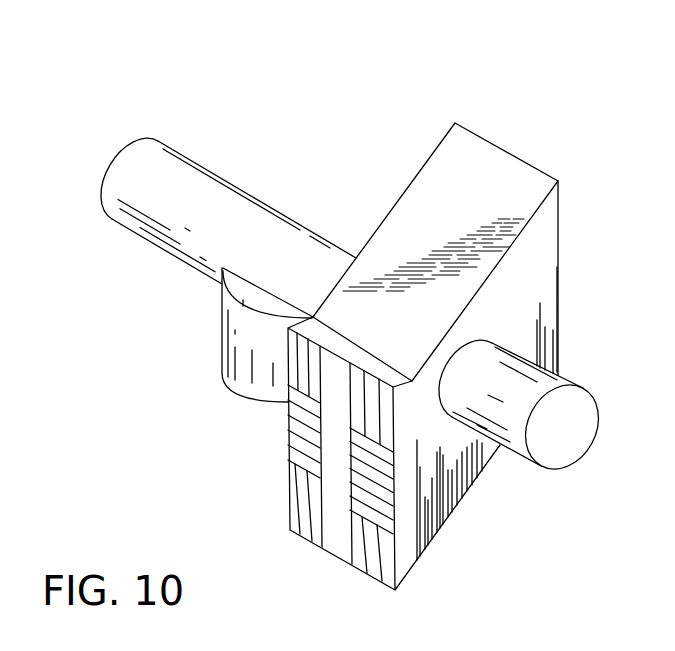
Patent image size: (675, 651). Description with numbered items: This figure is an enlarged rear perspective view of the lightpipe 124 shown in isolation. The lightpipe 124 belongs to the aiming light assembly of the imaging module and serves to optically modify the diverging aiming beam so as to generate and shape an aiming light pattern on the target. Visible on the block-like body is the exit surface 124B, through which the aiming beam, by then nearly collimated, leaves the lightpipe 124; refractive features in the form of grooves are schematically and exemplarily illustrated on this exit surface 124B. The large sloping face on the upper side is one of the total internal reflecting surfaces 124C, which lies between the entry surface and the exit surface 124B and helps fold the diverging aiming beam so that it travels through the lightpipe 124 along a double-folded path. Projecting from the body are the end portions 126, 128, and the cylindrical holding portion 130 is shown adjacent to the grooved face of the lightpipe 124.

The lightpipe 124 is at (285, 87).
The exit surface 124B is at (307, 478).
The total internal reflecting surface 124C is at (410, 211).
The end portion 126 is at (573, 438).
The end portion 128 is at (177, 180).
The cylindrical holding portion 130 is at (233, 363).